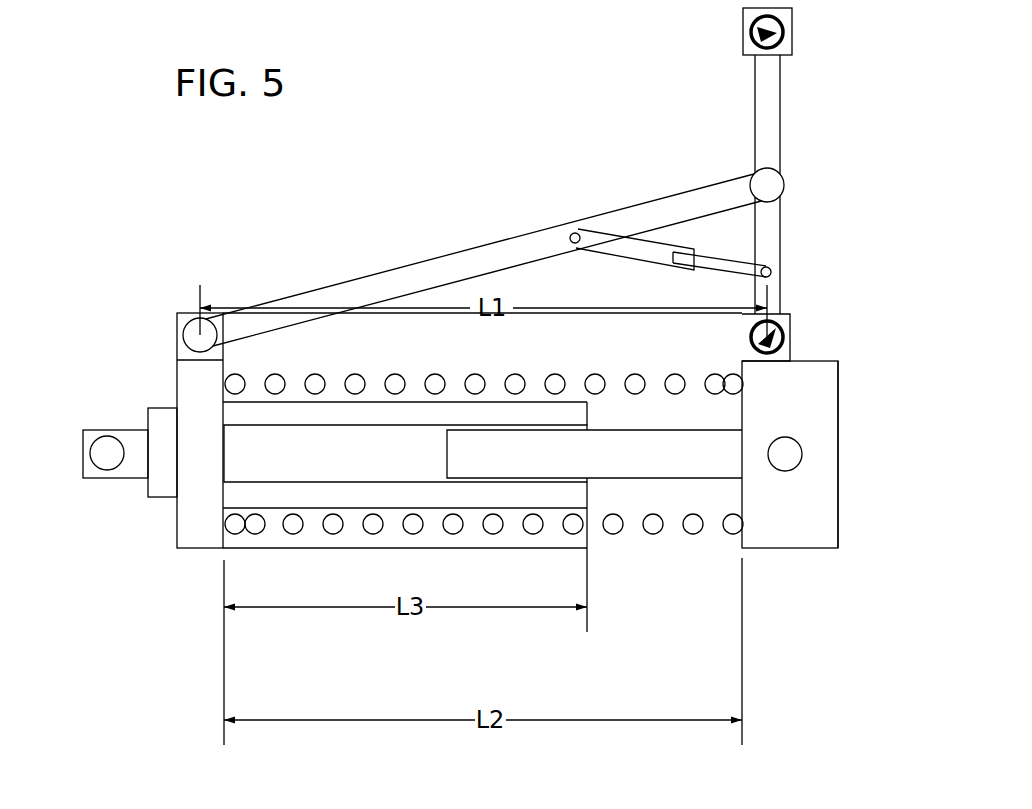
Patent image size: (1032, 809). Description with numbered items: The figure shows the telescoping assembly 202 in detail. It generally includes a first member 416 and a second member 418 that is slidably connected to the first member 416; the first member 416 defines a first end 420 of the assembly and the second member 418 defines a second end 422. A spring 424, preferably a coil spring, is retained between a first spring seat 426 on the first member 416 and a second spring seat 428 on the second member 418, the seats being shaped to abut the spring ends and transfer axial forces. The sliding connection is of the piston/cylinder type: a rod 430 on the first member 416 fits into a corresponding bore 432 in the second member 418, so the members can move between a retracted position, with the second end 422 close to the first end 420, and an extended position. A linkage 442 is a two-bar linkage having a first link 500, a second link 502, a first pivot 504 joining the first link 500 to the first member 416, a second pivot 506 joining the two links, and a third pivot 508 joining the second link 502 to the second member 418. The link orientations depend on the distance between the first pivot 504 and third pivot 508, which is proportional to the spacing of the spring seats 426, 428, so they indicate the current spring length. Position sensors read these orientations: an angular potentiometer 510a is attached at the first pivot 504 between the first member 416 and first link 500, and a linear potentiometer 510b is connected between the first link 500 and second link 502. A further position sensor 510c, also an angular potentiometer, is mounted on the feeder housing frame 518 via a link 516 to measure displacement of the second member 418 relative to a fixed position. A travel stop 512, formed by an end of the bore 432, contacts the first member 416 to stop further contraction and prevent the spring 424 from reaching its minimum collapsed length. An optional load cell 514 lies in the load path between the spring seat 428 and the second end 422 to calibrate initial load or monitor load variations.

The telescoping assembly 202 is at (150, 200).
The first member 416 is at (802, 501).
The second member 418 is at (198, 468).
The first end 420 is at (838, 477).
The second end 422 is at (83, 466).
The spring 424 is at (595, 375).
The first spring seat 426 is at (743, 500).
The second spring seat 428 is at (223, 508).
The rod 430 is at (653, 457).
The bore 432 is at (414, 413).
The linkage 442 is at (437, 229).
The first link 500 is at (762, 248).
The second link 502 is at (355, 282).
The first pivot 504 is at (752, 338).
The second pivot 506 is at (760, 188).
The third pivot 508 is at (193, 335).
The angular potentiometer 510a is at (790, 340).
The linear potentiometer 510b is at (652, 253).
The position sensor 510c is at (752, 40).
The travel stop 512 is at (587, 490).
The load cell 514 is at (160, 421).
The link 516 is at (773, 85).
The feeder housing frame 518 is at (792, 40).